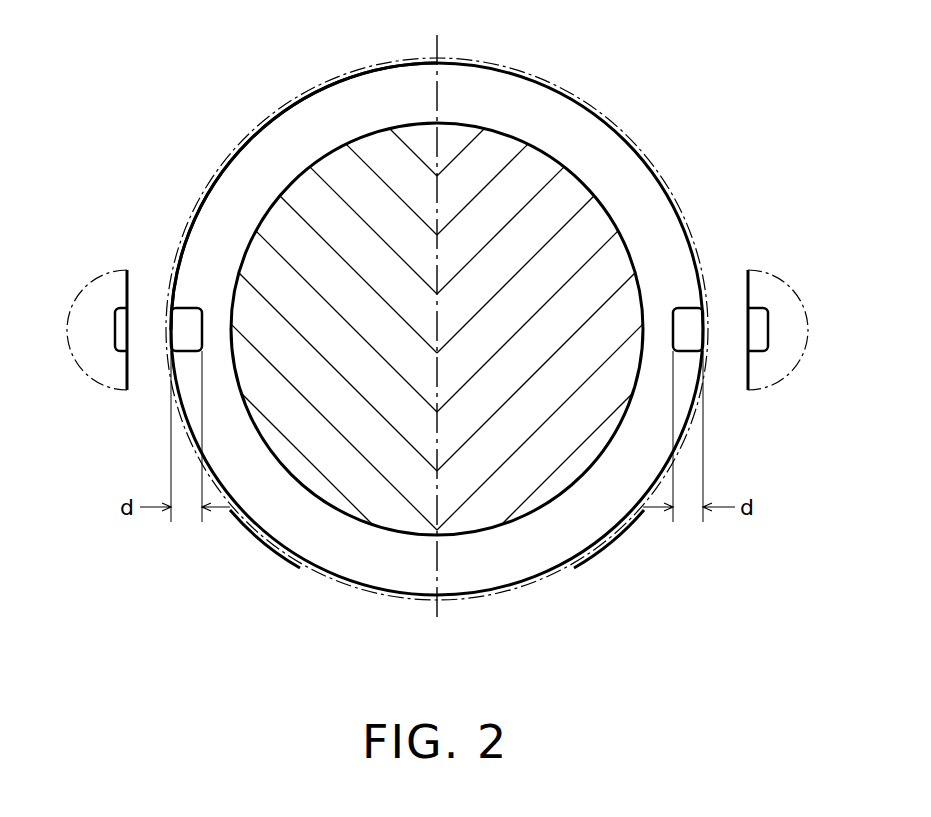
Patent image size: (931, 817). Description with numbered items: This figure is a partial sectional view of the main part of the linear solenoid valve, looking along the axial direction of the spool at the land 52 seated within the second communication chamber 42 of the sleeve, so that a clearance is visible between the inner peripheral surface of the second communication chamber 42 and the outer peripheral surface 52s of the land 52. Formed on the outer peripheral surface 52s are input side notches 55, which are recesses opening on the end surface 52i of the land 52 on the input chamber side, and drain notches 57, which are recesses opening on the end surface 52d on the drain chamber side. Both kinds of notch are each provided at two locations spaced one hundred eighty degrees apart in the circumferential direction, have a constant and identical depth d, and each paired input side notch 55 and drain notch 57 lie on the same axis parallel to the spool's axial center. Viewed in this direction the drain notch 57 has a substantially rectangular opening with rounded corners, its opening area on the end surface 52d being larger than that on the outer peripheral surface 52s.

The second communication chamber 42 is at (490, 596).
The land 52 is at (630, 136).
The outer peripheral surface of the land 52s is at (263, 128).
The end surface of the land on the input chamber side 52i is at (275, 522).
The end surface of the land on the drain chamber side 52d is at (600, 522).
The input side notch 55 is at (193, 328).
The drain notch 57 is at (682, 328).